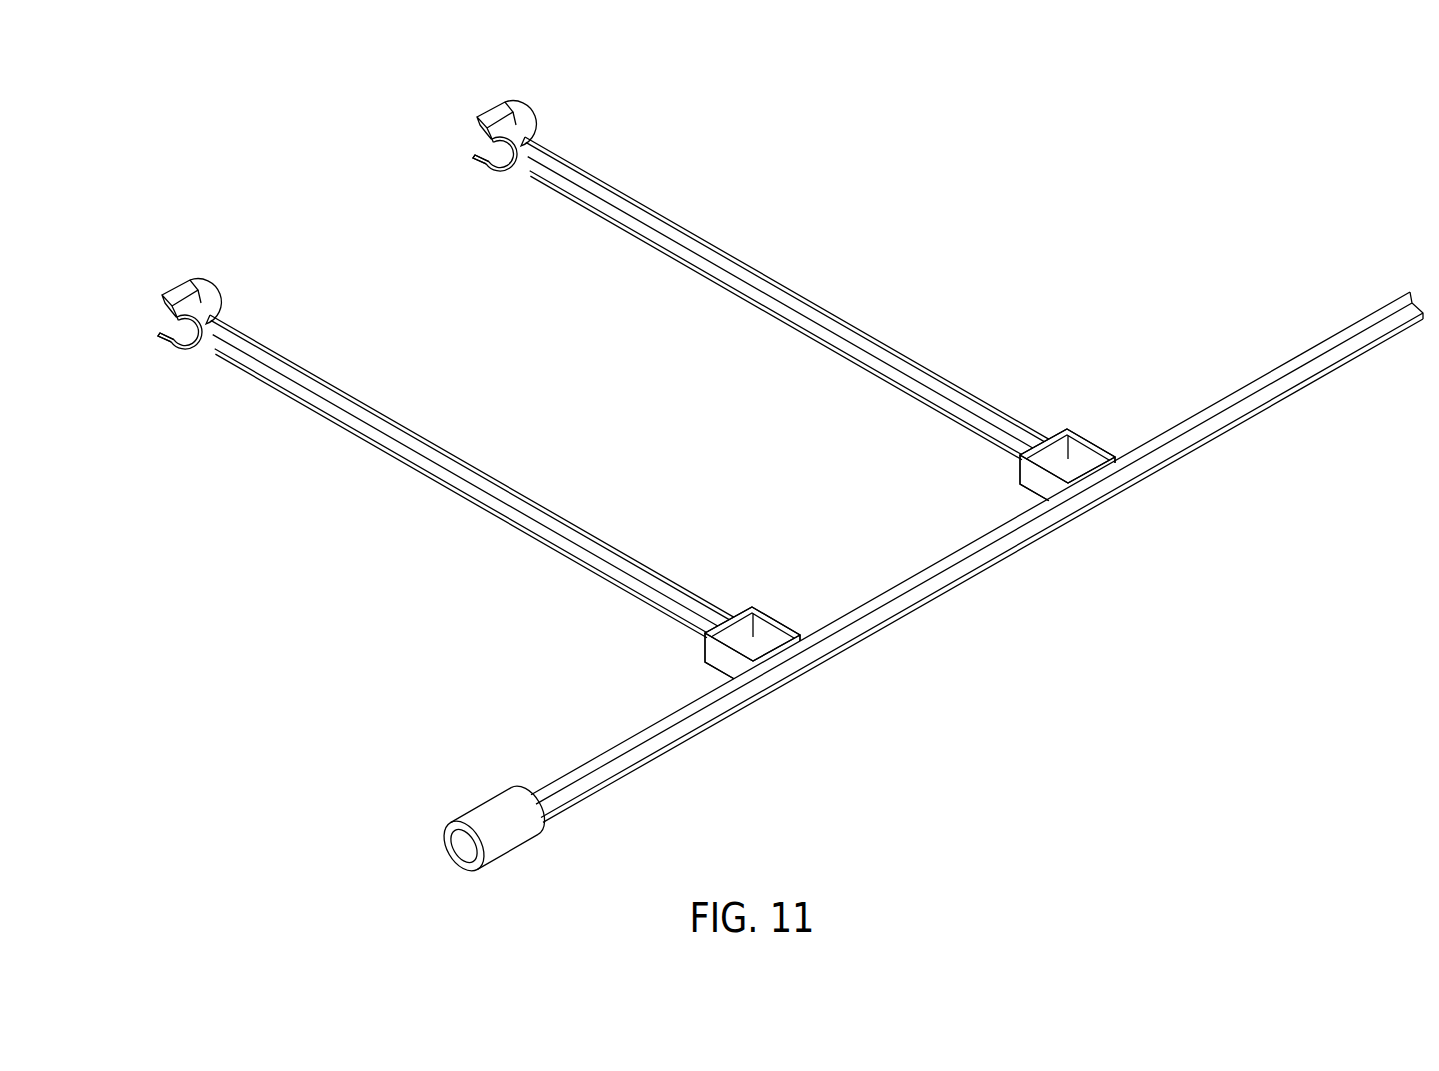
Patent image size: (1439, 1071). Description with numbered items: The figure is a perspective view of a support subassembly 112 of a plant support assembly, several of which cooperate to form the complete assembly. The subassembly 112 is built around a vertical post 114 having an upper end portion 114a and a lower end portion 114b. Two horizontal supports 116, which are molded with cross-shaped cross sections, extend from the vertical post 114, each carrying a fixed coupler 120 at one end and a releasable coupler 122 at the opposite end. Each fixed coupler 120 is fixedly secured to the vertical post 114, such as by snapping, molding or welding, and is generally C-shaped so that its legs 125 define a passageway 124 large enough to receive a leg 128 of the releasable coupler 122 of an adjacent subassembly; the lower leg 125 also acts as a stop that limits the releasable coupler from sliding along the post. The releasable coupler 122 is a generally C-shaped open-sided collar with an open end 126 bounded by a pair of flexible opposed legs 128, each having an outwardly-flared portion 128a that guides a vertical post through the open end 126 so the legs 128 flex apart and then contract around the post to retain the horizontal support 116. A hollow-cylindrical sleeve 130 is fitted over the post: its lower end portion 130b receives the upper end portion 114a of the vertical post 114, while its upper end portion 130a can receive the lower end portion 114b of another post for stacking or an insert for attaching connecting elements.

The subassembly 112 is at (1062, 650).
The vertical post 114 is at (948, 590).
The upper end portion 114a is at (453, 783).
The lower end portion 114b is at (1373, 282).
The horizontal support 116 is at (462, 460).
The fixed coupler 120 is at (757, 610).
The passageway 124 is at (745, 630).
The legs of fixed coupler 125 is at (793, 628).
The releasable coupler 122 is at (222, 306).
The open end 126 is at (150, 322).
The leg 128 is at (197, 360).
The outwardly-flared portion 128a is at (205, 272).
The sleeve 130 is at (507, 804).
The upper end portion of sleeve 130a is at (500, 873).
The lower end portion of sleeve 130b is at (558, 831).